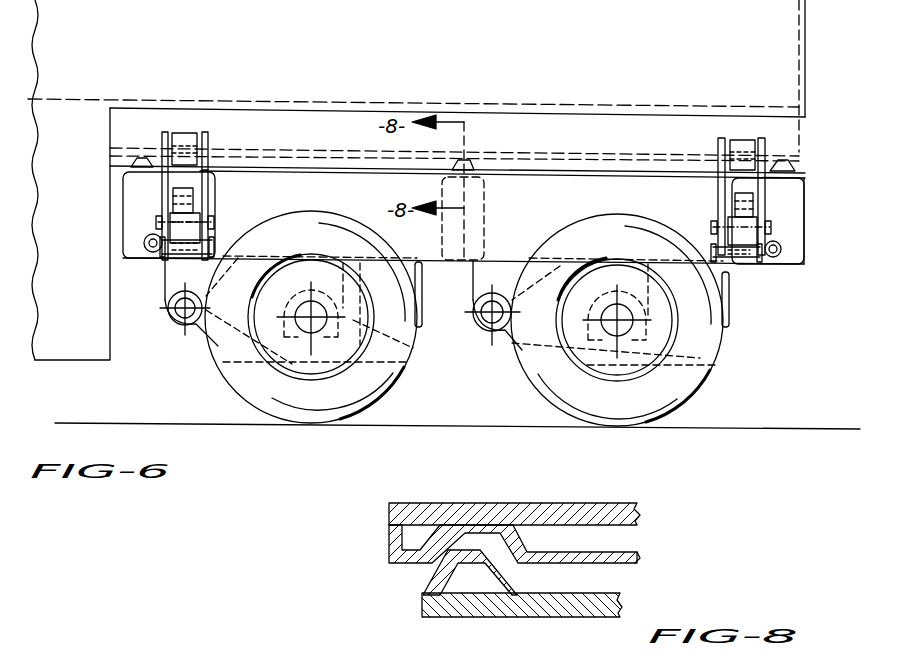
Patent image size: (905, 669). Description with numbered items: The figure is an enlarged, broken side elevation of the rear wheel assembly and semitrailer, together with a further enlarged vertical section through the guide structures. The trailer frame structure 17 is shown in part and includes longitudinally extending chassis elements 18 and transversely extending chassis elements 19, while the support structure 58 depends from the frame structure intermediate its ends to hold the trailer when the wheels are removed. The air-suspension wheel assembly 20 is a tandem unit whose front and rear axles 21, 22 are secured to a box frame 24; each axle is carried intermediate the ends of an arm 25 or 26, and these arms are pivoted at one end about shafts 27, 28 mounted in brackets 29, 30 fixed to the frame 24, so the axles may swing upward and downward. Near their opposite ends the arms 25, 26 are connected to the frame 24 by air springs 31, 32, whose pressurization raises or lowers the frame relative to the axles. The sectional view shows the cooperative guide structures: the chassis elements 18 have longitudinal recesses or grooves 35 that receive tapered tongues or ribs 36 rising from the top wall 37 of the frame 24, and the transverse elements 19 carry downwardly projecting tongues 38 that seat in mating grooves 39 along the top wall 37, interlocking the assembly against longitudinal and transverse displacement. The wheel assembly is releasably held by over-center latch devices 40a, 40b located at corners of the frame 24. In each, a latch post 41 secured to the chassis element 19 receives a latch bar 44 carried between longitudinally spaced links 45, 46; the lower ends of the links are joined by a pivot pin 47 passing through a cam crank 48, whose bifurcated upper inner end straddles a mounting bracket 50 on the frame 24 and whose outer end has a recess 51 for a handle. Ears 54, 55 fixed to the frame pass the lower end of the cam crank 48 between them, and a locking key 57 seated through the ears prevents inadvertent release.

In FIG. 6, the frame structure 17 is at (289, 104).
In FIG. 8, the frame structure 17 is at (606, 510).
In FIG. 6, the longitudinally extending frame or chassis elements 18 is at (246, 116).
In FIG. 8, the transversely extending frame or chassis elements 19 is at (632, 540).
In FIG. 6, the air-suspension wheel assembly 20 is at (805, 216).
In FIG. 6, the front axle 21 is at (309, 333).
In FIG. 6, the rear axle 22 is at (626, 335).
In FIG. 6, the box frame 24 is at (806, 242).
In FIG. 6, the arm 25 is at (216, 368).
In FIG. 6, the arm 26 is at (529, 372).
In FIG. 6, the shaft 27 is at (182, 320).
In FIG. 6, the shaft 28 is at (488, 332).
In FIG. 6, the bracket 29 is at (164, 284).
In FIG. 6, the bracket 30 is at (473, 280).
In FIG. 6, the air spring 31 is at (424, 283).
In FIG. 6, the air spring 32 is at (729, 315).
In FIG. 6, the recesses or grooves 35 is at (529, 157).
In FIG. 8, the recesses or grooves 35 is at (464, 532).
In FIG. 6, the tongues or ribs 36 is at (615, 160).
In FIG. 8, the tongues or ribs 36 is at (436, 583).
In FIG. 8, the top wall 37 is at (545, 618).
In FIG. 8, the tongues or ribs 38 is at (640, 560).
In FIG. 6, the recesses or grooves 39 is at (140, 157).
In FIG. 8, the recesses or grooves 39 is at (598, 586).
In FIG. 6, the over-center latch device 40a is at (181, 132).
In FIG. 6, the over-center latch device 40b is at (722, 138).
In FIG. 6, the latch post 41 is at (197, 137).
In FIG. 6, the latch bar 44 is at (738, 141).
In FIG. 6, the link 45 is at (207, 178).
In FIG. 6, the link 46 is at (720, 150).
In FIG. 6, the pivot pin 47 is at (158, 222).
In FIG. 6, the cam crank 48 is at (173, 212).
In FIG. 6, the mounting bracket 50 is at (178, 196).
In FIG. 6, the recess 51 is at (748, 270).
In FIG. 6, the ear 54 is at (760, 262).
In FIG. 6, the ear 55 is at (730, 260).
In FIG. 6, the locking key 57 is at (144, 247).
In FIG. 6, the support structure 58 is at (85, 352).